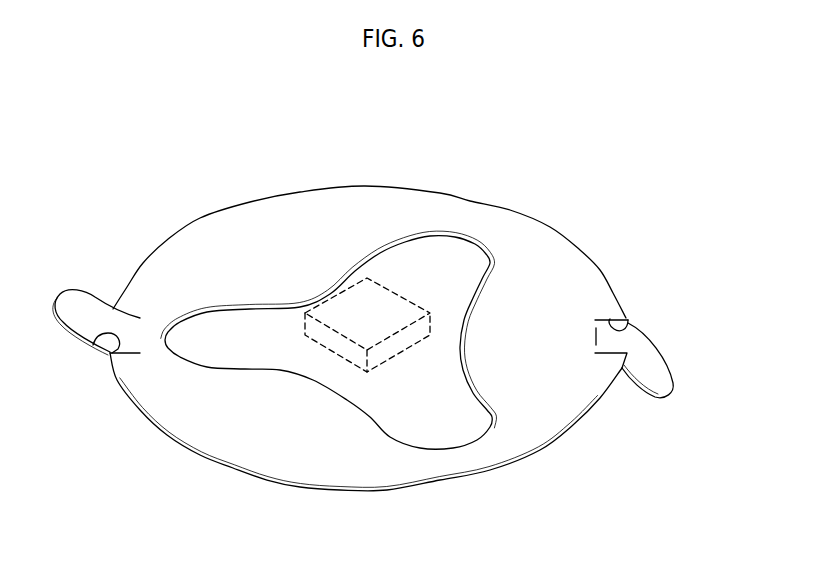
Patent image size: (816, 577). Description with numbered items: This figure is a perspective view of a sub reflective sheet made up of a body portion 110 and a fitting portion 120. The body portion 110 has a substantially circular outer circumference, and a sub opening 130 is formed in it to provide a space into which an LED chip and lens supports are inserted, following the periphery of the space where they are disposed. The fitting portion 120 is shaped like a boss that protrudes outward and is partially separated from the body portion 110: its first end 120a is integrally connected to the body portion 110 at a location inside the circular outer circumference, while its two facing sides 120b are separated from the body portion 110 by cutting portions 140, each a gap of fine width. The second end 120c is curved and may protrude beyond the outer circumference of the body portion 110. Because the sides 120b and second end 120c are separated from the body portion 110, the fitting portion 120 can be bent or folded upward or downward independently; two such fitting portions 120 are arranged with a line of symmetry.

The body portion 110 is at (288, 217).
The fitting portion 120 is at (655, 356).
The first end 120a is at (596, 341).
The sides 120b is at (630, 318).
The second end 120c is at (668, 395).
The sub opening 130 is at (350, 400).
The cutting portion 140 is at (93, 347).